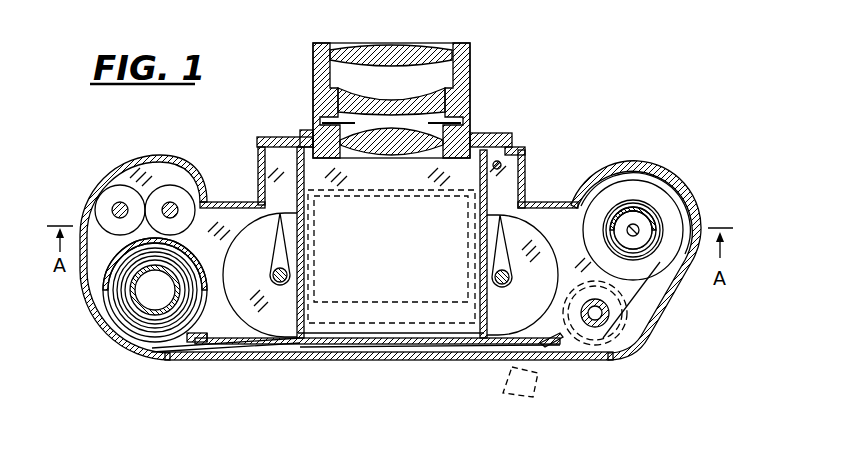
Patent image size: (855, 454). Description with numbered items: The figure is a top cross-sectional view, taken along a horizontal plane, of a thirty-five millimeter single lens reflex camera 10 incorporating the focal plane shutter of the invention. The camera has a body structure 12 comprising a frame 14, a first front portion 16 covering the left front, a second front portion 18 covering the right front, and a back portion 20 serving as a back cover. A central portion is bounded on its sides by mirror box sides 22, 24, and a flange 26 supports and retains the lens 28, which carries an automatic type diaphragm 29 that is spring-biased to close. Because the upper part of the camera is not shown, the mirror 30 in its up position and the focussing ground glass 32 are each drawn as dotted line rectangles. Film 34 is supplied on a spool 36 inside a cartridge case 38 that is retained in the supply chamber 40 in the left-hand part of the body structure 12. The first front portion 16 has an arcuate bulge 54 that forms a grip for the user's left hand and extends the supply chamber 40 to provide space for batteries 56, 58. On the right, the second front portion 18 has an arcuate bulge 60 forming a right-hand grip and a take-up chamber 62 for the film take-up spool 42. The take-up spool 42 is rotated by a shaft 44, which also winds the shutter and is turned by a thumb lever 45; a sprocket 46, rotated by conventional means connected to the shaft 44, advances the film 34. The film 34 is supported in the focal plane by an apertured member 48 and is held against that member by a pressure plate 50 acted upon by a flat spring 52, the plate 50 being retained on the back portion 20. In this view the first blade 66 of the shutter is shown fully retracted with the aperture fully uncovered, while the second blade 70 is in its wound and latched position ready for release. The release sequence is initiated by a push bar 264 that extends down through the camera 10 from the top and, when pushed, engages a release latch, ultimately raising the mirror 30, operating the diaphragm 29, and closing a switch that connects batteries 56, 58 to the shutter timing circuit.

The camera 10 is at (385, 249).
The body structure 12 is at (264, 142).
The frame 14 is at (572, 240).
The first front portion 16 is at (236, 202).
The second front portion 18 is at (553, 204).
The back portion 20 is at (300, 361).
The mirror box side 22 is at (297, 212).
The mirror box side 24 is at (487, 222).
The flange 26 is at (495, 140).
The push bar 264 is at (512, 170).
The lens 28 is at (470, 70).
The automatic type diaphragm 29 is at (320, 122).
The mirror 30 is at (420, 323).
The focussing ground glass 32 is at (377, 302).
The film 34 is at (163, 342).
The spool 36 is at (123, 328).
The cartridge case 38 is at (92, 285).
The supply chamber 40 is at (123, 246).
The film take-up spool 42 is at (672, 177).
The shaft 44 is at (634, 229).
The thumb lever 45 is at (516, 396).
The sprocket 46 is at (603, 347).
The apertured member 48 is at (552, 345).
The pressure plate 50 is at (402, 348).
The flat spring 52 is at (488, 358).
The arcuate bulge 54 is at (150, 152).
The battery 56 is at (112, 188).
The battery 58 is at (176, 190).
The arcuate bulge 60 is at (628, 160).
The take-up chamber 62 is at (650, 172).
The first blade 66 is at (550, 312).
The second blade 70 is at (238, 232).